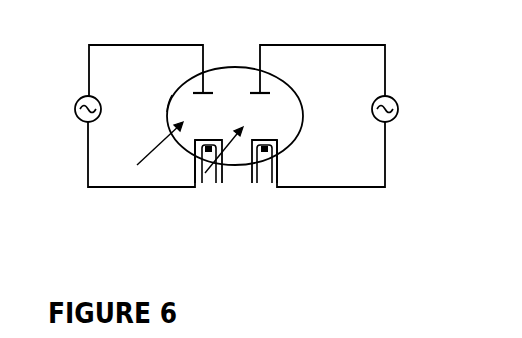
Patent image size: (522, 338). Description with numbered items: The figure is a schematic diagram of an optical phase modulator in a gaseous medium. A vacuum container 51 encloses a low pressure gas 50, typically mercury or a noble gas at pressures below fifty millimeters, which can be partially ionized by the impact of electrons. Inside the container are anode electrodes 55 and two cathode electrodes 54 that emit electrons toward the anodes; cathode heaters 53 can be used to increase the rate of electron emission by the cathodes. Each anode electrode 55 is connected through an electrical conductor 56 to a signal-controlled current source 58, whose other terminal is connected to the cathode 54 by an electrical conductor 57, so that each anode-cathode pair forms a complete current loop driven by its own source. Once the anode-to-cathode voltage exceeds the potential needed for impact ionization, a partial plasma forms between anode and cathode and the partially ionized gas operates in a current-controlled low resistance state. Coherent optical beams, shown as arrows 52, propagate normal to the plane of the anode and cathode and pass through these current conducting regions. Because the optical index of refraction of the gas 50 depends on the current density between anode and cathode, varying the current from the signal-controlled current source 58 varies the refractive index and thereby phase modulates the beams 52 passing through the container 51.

The low pressure gas 50 is at (231, 67).
The vacuum container 51 is at (168, 112).
The coherent optical beams 52 is at (191, 139).
The cathode heaters 53 is at (236, 175).
The cathode electrodes 54 is at (236, 152).
The anode electrodes 55 is at (231, 102).
The electrical conductor 56 is at (146, 61).
The electrical conductor 57 is at (141, 165).
The signal-controlled current source 58 is at (74, 109).